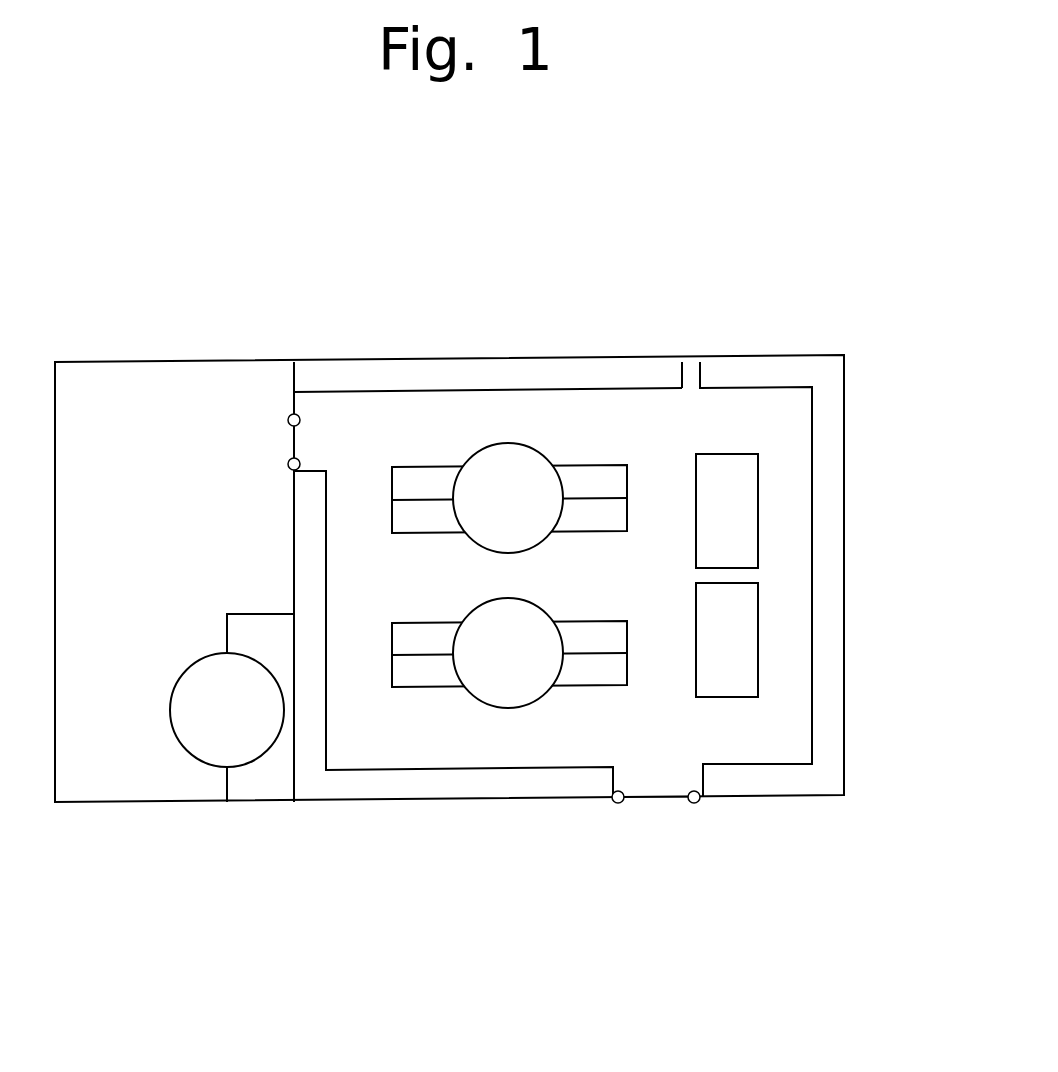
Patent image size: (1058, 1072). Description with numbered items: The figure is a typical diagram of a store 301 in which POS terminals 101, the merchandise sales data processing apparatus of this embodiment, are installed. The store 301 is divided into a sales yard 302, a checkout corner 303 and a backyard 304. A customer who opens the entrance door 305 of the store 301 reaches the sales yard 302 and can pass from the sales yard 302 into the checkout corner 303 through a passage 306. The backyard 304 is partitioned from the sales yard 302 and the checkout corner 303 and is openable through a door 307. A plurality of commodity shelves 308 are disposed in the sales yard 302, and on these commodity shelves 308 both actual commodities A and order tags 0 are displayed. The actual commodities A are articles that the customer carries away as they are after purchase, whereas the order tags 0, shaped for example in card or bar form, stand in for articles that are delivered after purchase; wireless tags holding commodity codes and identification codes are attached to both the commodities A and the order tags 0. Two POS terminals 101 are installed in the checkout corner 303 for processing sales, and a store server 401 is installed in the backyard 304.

The store 301 is at (821, 322).
The backyard 304 is at (117, 403).
The door 307 is at (294, 440).
The sales yard 302 is at (368, 743).
The commodity shelves 308 is at (310, 548).
The passage 306 is at (735, 425).
The entrance door 305 is at (667, 798).
The checkout corner 303 is at (782, 717).
The POS terminal 101 is at (747, 608).
The actual commodity A is at (528, 467).
The order tag 0 is at (507, 690).
The store server 401 is at (213, 736).